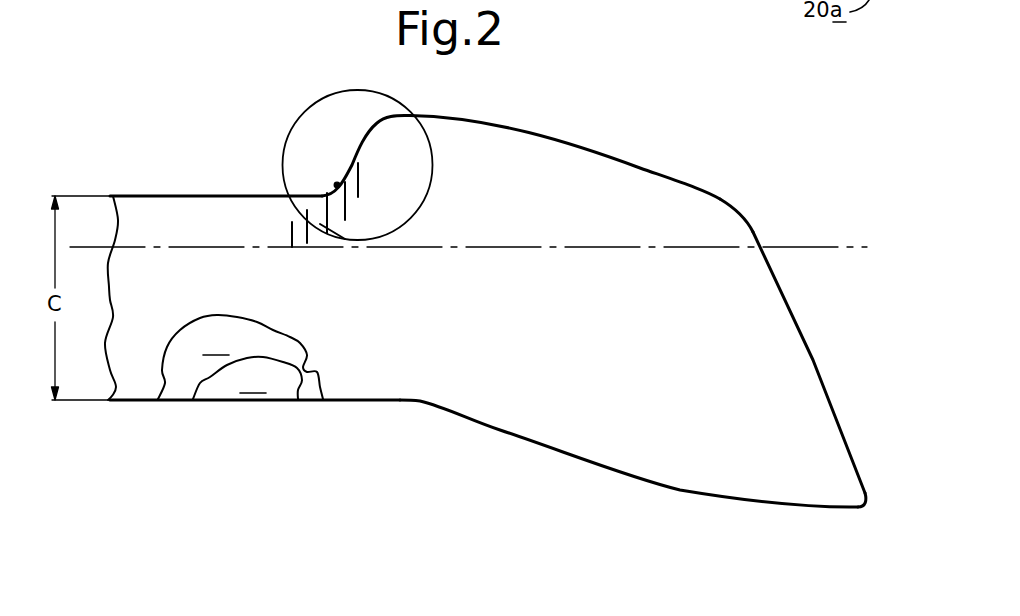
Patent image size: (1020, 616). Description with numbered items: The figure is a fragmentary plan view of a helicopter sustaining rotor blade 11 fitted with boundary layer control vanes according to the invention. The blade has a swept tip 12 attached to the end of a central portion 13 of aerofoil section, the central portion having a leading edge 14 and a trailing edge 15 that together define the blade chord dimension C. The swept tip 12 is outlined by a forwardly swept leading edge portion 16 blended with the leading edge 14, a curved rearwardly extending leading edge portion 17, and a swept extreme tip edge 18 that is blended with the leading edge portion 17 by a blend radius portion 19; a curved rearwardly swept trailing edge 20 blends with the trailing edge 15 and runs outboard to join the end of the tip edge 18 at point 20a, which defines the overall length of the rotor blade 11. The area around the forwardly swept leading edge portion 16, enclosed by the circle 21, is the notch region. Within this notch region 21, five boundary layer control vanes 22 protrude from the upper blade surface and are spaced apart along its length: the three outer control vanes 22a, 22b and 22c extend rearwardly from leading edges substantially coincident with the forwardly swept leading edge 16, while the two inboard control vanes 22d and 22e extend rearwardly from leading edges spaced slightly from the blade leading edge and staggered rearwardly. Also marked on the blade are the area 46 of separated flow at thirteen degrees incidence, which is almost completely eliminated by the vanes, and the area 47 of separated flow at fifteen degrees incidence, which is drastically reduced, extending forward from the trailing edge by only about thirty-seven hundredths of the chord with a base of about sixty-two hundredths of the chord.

The helicopter sustaining rotor blade 11 is at (566, 108).
The swept tip 12 is at (601, 299).
The central portion 13 is at (143, 203).
The leading edge 14 is at (213, 195).
The trailing edge 15 is at (147, 401).
The forwardly swept leading edge portion 16 is at (370, 135).
The curved rearwardly extending leading edge portion 17 is at (590, 150).
The swept extreme tip edge 18 is at (797, 320).
The blend radius portion 19 is at (752, 222).
The curved rearwardly swept trailing edge 20 is at (550, 445).
The point 20a is at (868, 508).
The notch region 21 is at (396, 103).
The boundary layer control vanes 22 is at (337, 185).
The outer control vane 22a is at (420, 167).
The outer control vane 22b is at (410, 219).
The outer control vane 22c is at (345, 239).
The inboard control vane 22d is at (310, 243).
The inboard control vane 22e is at (292, 247).
The area of separated flow 46 is at (205, 401).
The area of separated flow 47 is at (304, 401).